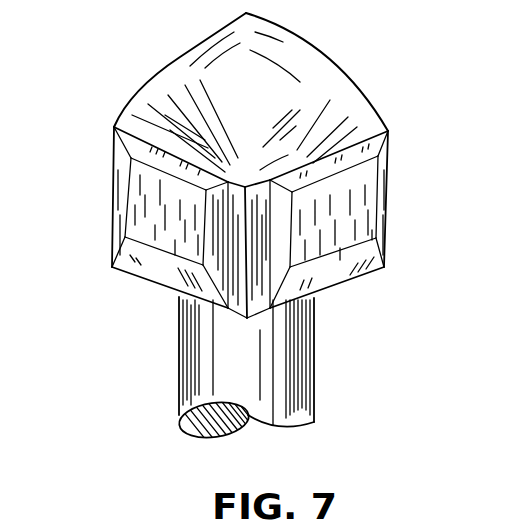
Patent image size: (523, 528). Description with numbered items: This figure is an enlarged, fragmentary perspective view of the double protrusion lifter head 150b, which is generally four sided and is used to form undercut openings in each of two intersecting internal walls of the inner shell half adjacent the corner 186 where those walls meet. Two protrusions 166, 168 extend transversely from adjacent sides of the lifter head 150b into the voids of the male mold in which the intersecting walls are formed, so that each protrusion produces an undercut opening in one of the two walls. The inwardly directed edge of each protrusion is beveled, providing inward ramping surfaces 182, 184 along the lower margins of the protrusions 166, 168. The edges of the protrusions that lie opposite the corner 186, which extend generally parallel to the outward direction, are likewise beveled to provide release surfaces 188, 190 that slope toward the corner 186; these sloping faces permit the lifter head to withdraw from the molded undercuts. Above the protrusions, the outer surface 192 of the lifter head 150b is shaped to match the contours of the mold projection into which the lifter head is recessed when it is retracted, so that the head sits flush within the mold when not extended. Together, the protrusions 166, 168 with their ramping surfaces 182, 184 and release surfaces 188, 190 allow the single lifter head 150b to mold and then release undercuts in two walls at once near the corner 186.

The lifter head 150b is at (349, 74).
The outer surface 192 is at (282, 53).
The protrusion 166 is at (135, 180).
The release surface 188 is at (117, 202).
The protrusion 168 is at (360, 193).
The release surface 190 is at (387, 227).
The inward ramping surface 182 is at (158, 272).
The inward ramping surface 184 is at (332, 272).
The corner 186 is at (240, 302).